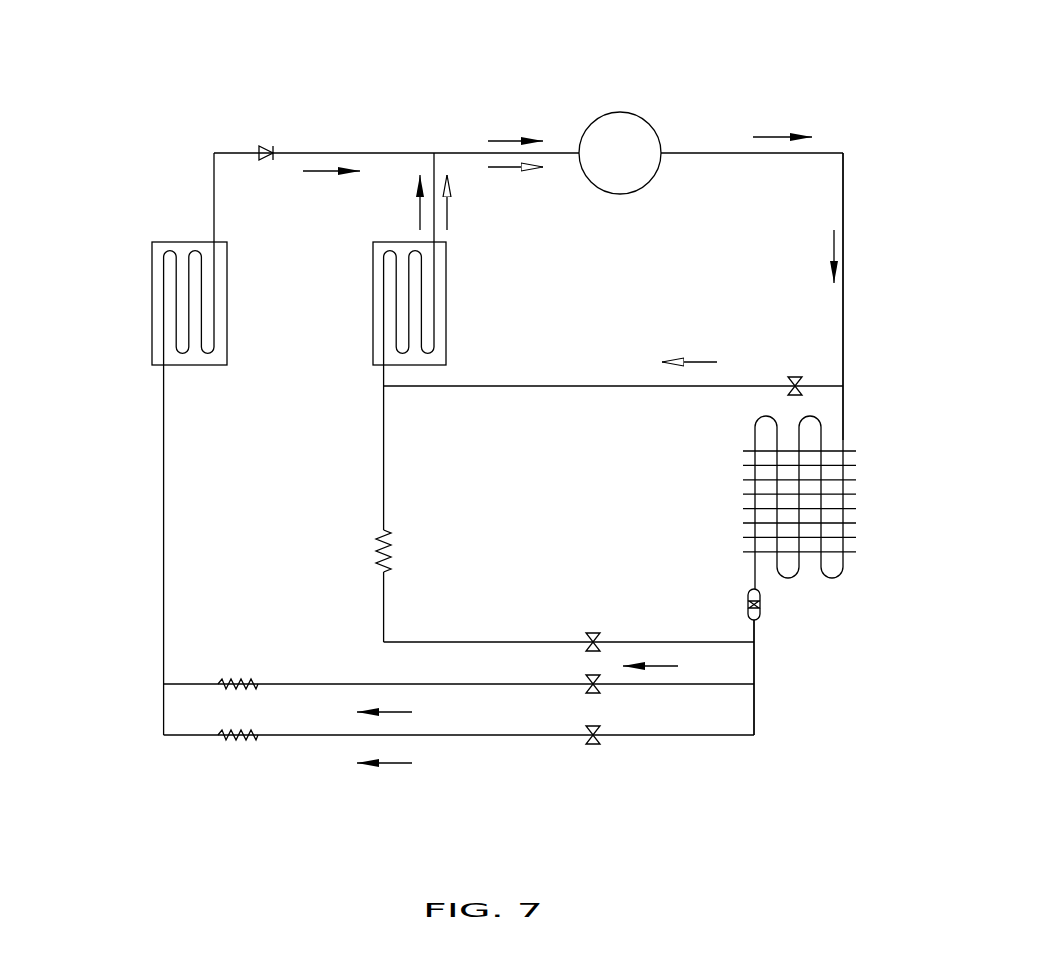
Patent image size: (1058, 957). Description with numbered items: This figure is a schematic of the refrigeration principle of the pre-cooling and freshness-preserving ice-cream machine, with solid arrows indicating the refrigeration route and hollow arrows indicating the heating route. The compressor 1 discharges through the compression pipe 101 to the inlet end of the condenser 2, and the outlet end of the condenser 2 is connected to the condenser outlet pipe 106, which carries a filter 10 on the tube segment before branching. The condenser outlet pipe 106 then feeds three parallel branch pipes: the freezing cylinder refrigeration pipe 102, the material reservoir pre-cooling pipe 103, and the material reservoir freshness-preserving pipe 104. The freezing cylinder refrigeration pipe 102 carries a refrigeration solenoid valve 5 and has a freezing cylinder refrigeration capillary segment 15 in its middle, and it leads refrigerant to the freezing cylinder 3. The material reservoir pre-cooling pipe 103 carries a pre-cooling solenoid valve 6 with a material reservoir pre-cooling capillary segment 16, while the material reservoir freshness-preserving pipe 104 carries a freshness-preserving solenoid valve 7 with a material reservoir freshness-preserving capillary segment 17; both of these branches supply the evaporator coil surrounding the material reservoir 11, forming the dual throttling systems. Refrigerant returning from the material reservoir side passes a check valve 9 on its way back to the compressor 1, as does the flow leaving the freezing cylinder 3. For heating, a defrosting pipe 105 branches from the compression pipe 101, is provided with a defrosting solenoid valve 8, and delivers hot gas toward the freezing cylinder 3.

The compressor 1 is at (632, 112).
The condenser 2 is at (843, 510).
The freezing cylinder 3 is at (373, 299).
The refrigeration solenoid valve 5 is at (590, 632).
The pre-cooling solenoid valve 6 is at (597, 688).
The freshness-preserving solenoid valve 7 is at (593, 743).
The defrosting solenoid valve 8 is at (793, 377).
The check valve 9 is at (265, 150).
The filter 10 is at (760, 605).
The material reservoir 11 is at (152, 312).
The freezing cylinder refrigeration capillary segment 15 is at (375, 552).
The material reservoir pre-cooling capillary segment 16 is at (243, 677).
The material reservoir freshness-preserving capillary segment 17 is at (230, 743).
The compression pipe 101 is at (843, 318).
The freezing cylinder refrigeration pipe 102 is at (498, 642).
The material reservoir pre-cooling pipe 103 is at (447, 687).
The material reservoir freshness-preserving pipe 104 is at (502, 735).
The defrosting pipe 105 is at (540, 385).
The condenser outlet pipe 106 is at (755, 633).